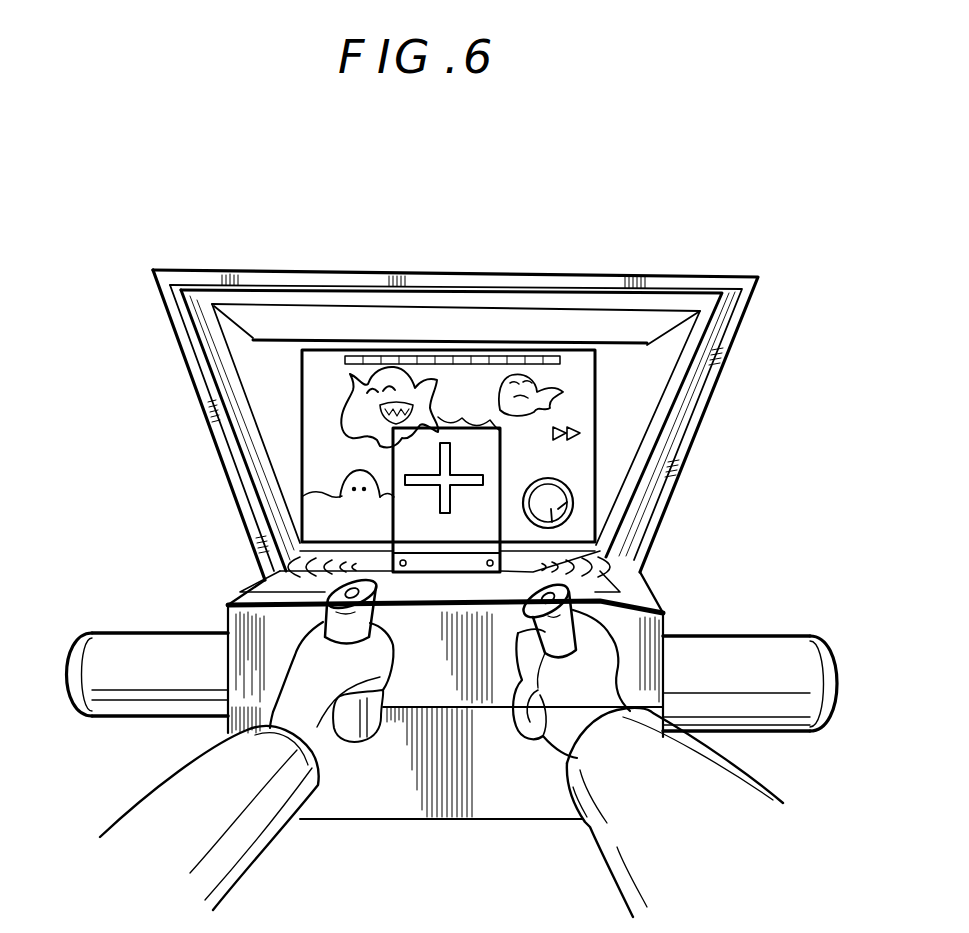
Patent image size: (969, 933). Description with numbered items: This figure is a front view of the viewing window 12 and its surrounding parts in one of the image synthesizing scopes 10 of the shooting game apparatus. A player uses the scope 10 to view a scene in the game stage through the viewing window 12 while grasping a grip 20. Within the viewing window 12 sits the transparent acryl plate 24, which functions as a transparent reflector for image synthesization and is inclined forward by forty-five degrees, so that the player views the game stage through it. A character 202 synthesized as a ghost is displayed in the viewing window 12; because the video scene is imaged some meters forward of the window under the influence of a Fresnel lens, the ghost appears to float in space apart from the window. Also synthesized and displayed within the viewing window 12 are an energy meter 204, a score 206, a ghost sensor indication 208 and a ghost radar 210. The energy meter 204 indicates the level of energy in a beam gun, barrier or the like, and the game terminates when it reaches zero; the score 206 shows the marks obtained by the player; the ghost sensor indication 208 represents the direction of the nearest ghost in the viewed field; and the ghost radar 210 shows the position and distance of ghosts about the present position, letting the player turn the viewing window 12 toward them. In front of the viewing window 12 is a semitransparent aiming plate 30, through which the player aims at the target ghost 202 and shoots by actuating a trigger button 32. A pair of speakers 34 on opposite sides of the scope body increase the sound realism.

The image synthesizing scope 10 is at (668, 236).
The viewing window 12 is at (652, 370).
The grip 20 is at (325, 622).
The transparent acryl plate 24 is at (678, 342).
The aiming plate 30 is at (428, 484).
The trigger button 32 is at (325, 591).
The speakers 34 is at (127, 640).
The character 202 is at (420, 377).
The energy meter 204 is at (321, 338).
The score 206 is at (610, 382).
The ghost sensor indication 208 is at (588, 448).
The ghost radar 210 is at (562, 520).